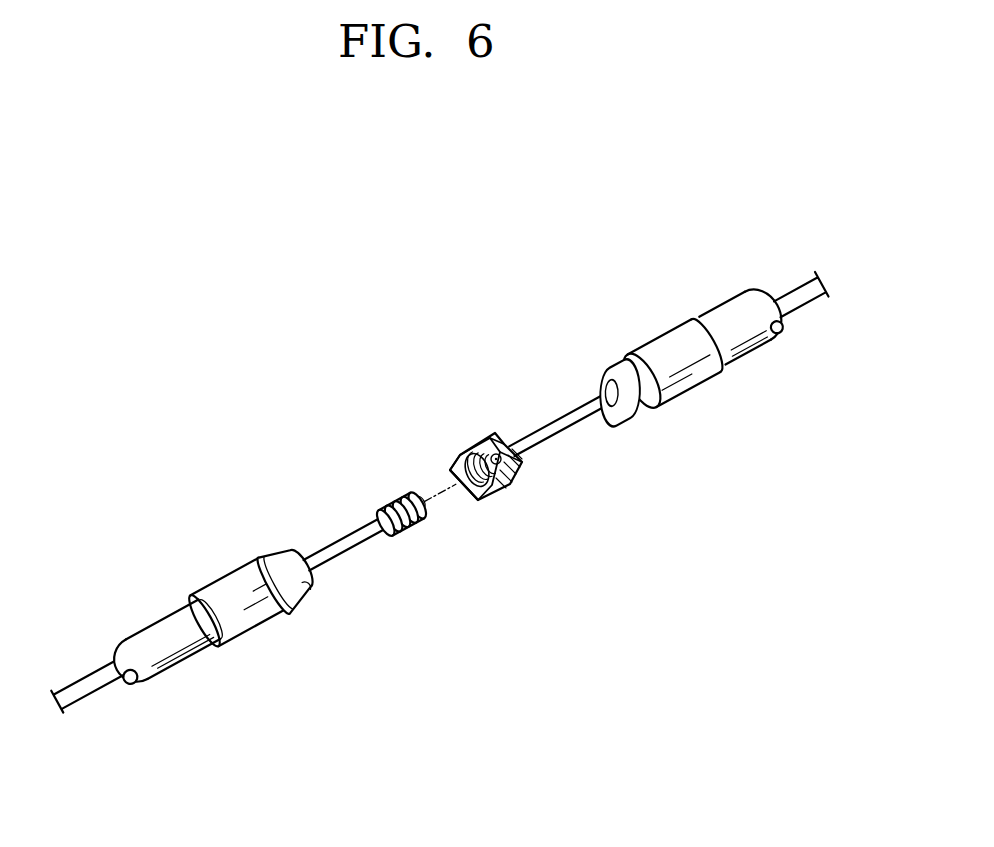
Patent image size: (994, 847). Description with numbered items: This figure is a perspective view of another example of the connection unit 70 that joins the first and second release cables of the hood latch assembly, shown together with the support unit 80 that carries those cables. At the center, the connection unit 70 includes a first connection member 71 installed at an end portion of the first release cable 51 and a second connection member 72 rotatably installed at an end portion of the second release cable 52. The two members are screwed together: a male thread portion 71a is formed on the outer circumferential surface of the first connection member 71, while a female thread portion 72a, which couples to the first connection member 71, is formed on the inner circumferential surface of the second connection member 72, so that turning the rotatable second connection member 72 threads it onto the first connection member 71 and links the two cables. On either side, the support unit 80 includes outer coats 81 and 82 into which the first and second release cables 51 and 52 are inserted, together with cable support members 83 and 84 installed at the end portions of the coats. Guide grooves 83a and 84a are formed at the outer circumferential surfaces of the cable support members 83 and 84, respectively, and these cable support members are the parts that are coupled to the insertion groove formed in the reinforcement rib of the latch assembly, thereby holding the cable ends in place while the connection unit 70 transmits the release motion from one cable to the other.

The support unit 80 is at (200, 624).
The outer coat 82 is at (168, 657).
The cable support member 84 is at (222, 583).
The guide groove 84a is at (288, 610).
The first release cable 51 is at (332, 568).
The connection unit 70 is at (446, 479).
The first connection member 71 is at (398, 480).
The male thread portion 71a is at (407, 528).
The second connection member 72 is at (445, 447).
The female thread portion 72a is at (476, 502).
The second release cable 52 is at (553, 441).
The cable support member 83 is at (664, 340).
The guide groove 83a is at (657, 392).
The outer coat 81 is at (737, 315).